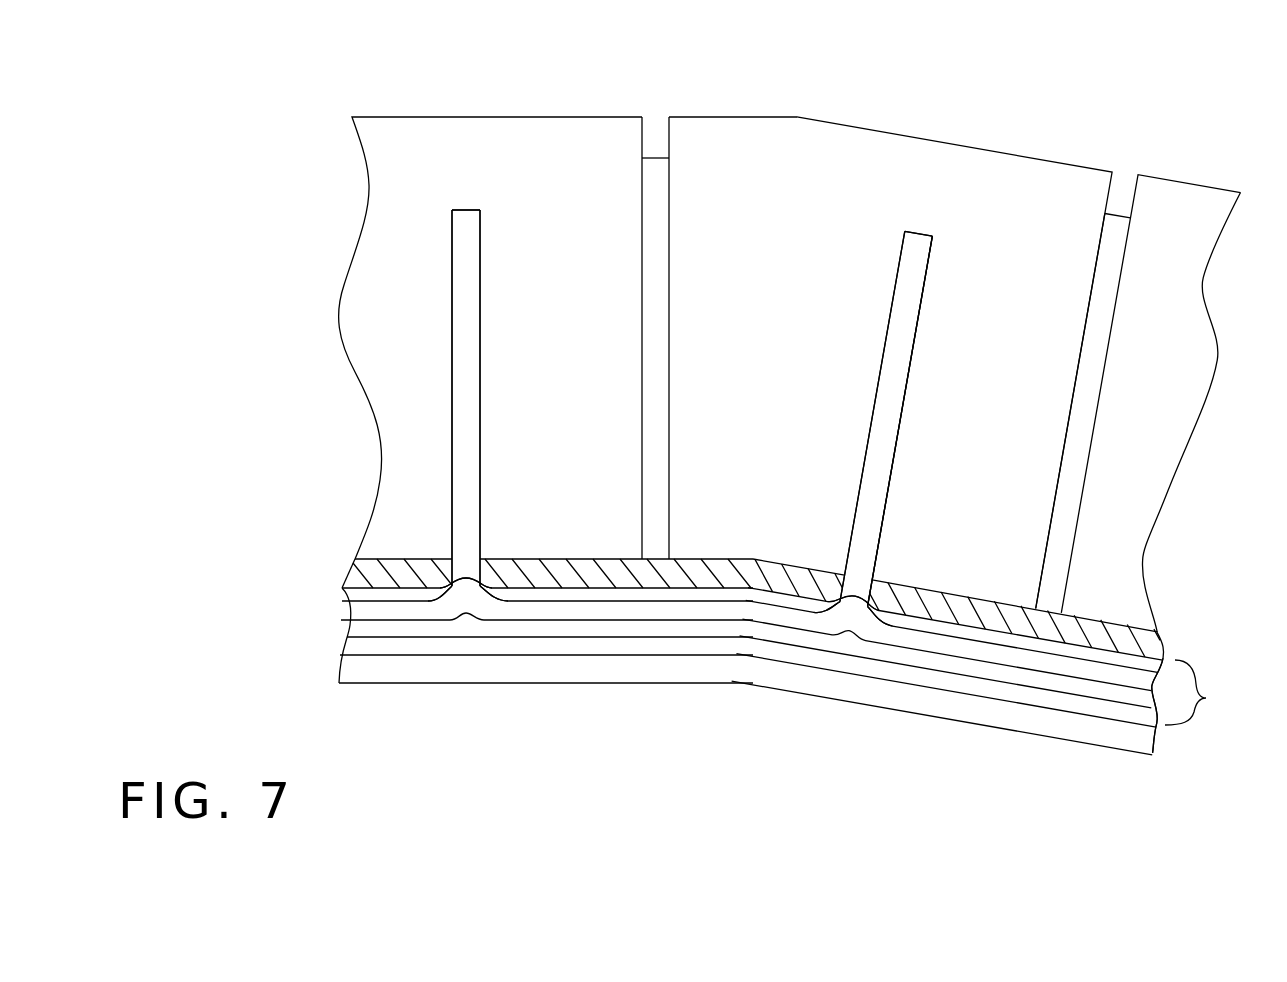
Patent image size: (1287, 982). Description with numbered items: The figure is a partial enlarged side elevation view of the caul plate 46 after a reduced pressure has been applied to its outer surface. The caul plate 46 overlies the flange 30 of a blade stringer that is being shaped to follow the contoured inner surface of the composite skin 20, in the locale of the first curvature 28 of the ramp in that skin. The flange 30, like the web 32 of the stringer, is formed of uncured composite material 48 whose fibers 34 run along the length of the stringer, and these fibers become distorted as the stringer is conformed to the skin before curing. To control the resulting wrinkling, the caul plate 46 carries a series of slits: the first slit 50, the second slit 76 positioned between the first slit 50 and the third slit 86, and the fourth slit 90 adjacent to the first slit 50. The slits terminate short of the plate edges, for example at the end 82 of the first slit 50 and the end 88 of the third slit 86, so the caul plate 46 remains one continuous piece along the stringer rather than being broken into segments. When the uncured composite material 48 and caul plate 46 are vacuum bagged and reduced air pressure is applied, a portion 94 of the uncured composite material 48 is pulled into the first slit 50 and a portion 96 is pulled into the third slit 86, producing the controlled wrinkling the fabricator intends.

The composite skin 20 is at (731, 677).
The first curvature 28 is at (753, 722).
The flange 30 is at (328, 630).
The web 32 is at (467, 262).
The fibers 34 is at (1204, 697).
The caul plate 46 is at (958, 177).
The uncured composite material 48 is at (466, 330).
The first slit 50 is at (934, 273).
The second slit 76 is at (670, 277).
The end of first slit 82 is at (918, 230).
The third slit 86 is at (482, 280).
The end of third slit 88 is at (466, 210).
The fourth slit 90 is at (1128, 365).
The portion of uncured composite material 94 is at (858, 612).
The portion of uncured composite material 96 is at (467, 598).